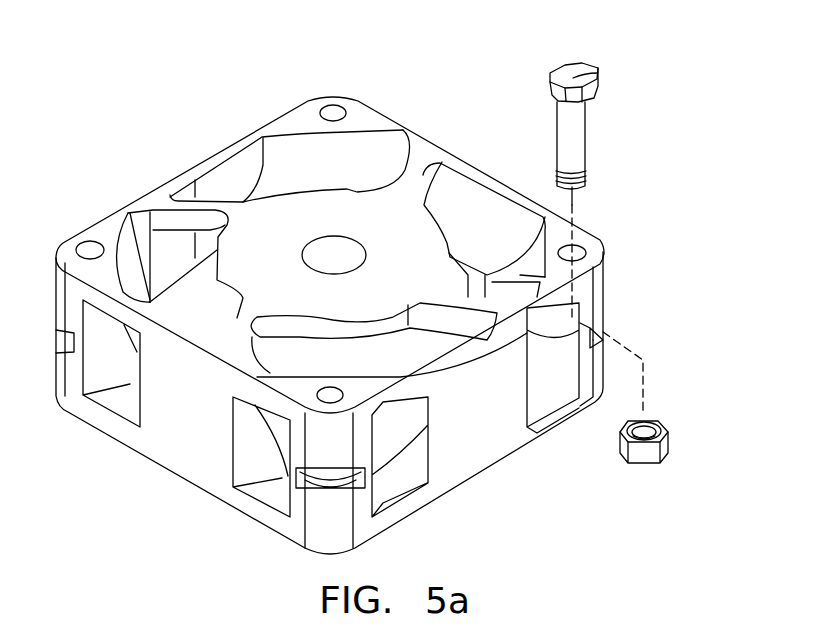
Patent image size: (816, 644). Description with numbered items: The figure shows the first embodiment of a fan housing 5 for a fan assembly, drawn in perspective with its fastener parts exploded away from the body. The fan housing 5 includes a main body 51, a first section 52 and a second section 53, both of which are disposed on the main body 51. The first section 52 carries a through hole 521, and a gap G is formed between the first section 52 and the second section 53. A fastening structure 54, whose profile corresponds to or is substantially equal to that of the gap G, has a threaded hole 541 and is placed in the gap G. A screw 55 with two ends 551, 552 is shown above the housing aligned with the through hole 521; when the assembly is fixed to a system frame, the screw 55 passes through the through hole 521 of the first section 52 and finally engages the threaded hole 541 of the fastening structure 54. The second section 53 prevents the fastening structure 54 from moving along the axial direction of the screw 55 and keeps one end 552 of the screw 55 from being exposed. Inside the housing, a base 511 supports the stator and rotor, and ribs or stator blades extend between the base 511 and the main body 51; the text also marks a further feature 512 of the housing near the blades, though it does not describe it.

The fan housing 5 is at (73, 27).
The main body 51 is at (472, 472).
The base 511 is at (357, 207).
The air inlet of frame 512 is at (417, 183).
The first section 52 is at (604, 284).
The through hole 521 is at (586, 252).
The gap G is at (606, 323).
The second section 53 is at (603, 379).
The fastening structure 54 is at (670, 440).
The threaded hole 541 is at (664, 423).
The screw 55 is at (703, 67).
The end of screw 551 is at (577, 78).
The end of screw 552 is at (589, 175).